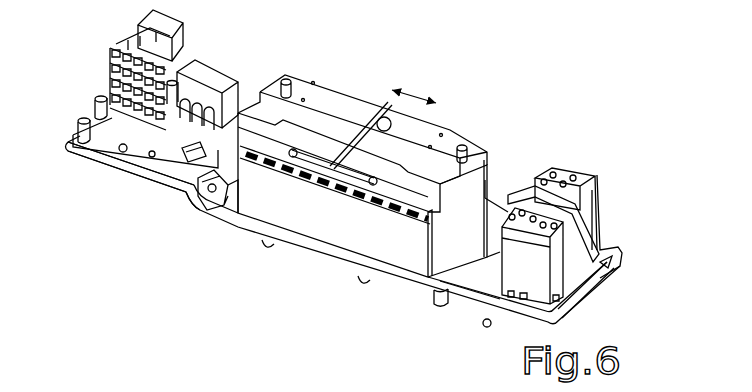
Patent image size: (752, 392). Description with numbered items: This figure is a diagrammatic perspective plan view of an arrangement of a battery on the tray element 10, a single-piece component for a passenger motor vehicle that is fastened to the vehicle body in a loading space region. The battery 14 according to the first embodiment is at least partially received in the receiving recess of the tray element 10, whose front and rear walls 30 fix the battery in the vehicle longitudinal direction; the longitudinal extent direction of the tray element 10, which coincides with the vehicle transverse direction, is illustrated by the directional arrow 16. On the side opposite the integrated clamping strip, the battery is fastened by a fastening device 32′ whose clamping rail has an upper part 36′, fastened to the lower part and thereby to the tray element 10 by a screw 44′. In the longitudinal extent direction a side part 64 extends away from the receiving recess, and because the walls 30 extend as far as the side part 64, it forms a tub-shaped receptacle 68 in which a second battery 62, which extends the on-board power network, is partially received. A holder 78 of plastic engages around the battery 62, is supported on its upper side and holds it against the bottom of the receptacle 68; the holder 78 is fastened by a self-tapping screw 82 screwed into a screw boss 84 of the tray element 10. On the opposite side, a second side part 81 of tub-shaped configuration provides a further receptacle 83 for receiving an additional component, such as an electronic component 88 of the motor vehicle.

The tray element 10 is at (402, 297).
The battery 14 is at (362, 150).
The directional arrow 16 is at (413, 90).
The walls 30 is at (318, 257).
The fastening device 32′ is at (212, 209).
The upper part 36′ is at (185, 200).
The screw 44′ is at (238, 170).
The second battery 62 is at (585, 170).
The side part 64 is at (615, 233).
The receptacle 68 is at (482, 278).
The holder 78 is at (600, 200).
The second side part 81 is at (120, 173).
The screw 82 is at (605, 257).
The receptacle 83 is at (120, 130).
The screw boss 84 is at (600, 285).
The fuse box 88 is at (193, 50).